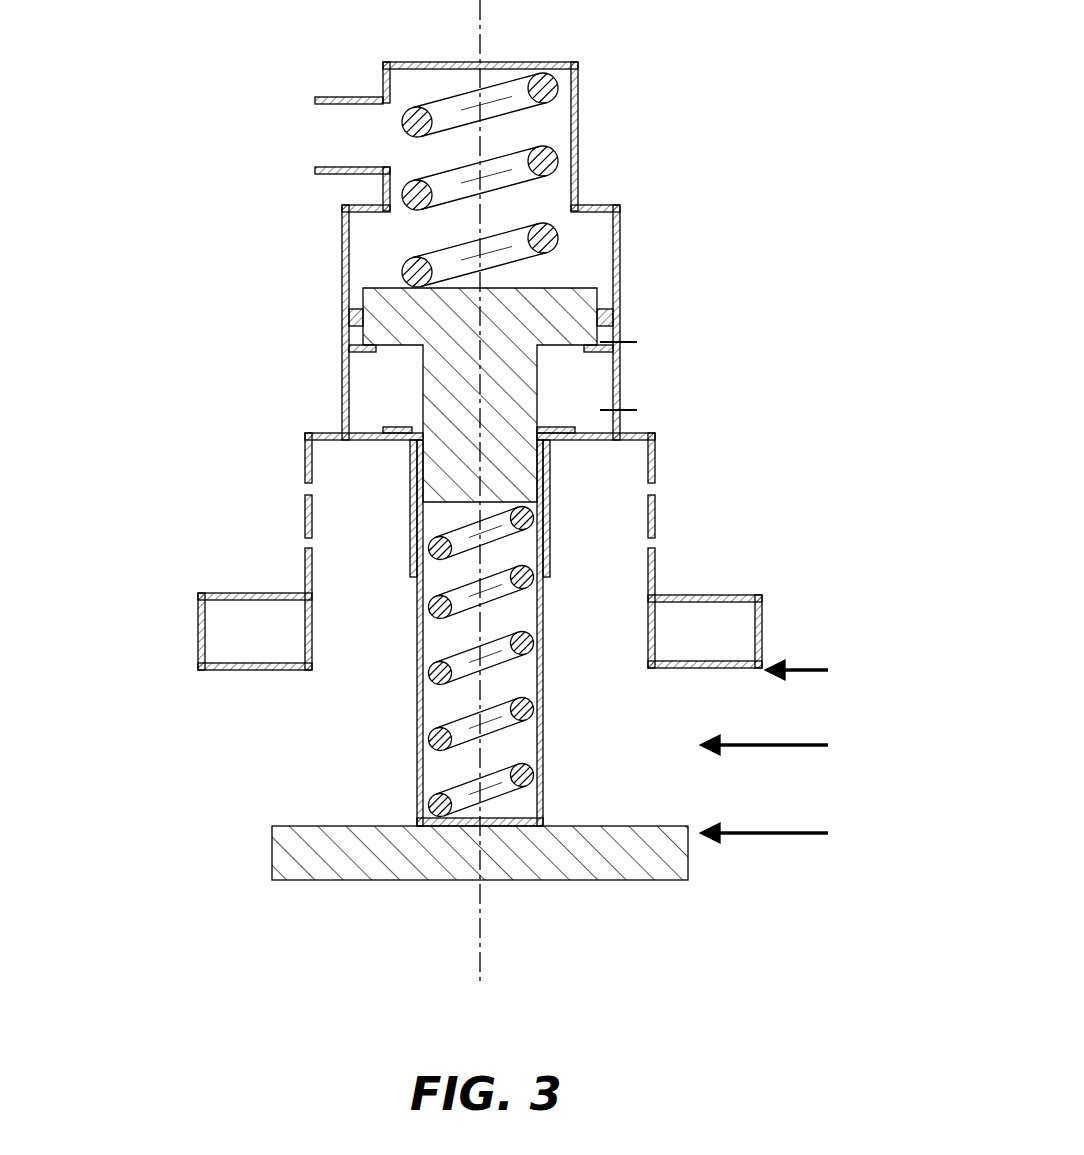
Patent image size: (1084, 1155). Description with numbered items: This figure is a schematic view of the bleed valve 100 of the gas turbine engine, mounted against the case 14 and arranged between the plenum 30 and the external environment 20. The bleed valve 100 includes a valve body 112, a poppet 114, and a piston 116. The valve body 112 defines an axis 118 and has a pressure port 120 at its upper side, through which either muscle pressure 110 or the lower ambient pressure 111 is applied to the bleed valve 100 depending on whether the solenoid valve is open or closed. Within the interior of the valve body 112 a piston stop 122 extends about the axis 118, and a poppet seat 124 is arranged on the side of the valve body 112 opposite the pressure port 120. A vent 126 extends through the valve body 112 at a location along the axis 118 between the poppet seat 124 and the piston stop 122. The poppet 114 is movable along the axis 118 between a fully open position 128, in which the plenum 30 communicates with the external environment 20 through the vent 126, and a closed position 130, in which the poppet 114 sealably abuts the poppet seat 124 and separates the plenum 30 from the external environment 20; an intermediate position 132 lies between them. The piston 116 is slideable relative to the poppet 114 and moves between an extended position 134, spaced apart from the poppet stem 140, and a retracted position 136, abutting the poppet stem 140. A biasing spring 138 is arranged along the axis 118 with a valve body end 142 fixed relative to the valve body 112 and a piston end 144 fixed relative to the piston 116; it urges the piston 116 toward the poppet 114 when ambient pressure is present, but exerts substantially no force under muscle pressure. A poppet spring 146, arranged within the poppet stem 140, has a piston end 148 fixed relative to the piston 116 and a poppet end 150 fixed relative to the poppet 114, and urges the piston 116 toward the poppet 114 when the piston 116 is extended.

The case 14 is at (718, 595).
The external environment 20 is at (112, 265).
The plenum 30 is at (236, 865).
The bleed valve 100 is at (142, 923).
The muscle pressure 110 is at (261, 115).
The ambient pressure 111 is at (368, 135).
The valve body 112 is at (223, 420).
The poppet 114 is at (380, 865).
The piston 116 is at (553, 317).
The axis 118 is at (482, 942).
The pressure port 120 is at (305, 155).
The piston stop 122 is at (368, 355).
The poppet seat 124 is at (270, 670).
The vent 126 is at (293, 543).
The fully open position 128 is at (768, 837).
The closed position 130 is at (805, 672).
The intermediate position 132 is at (767, 747).
The extended position 134 is at (628, 346).
The retracted position 136 is at (640, 405).
The biasing spring 138 is at (527, 165).
The poppet stem 140 is at (414, 668).
The valve body end 142 is at (545, 75).
The piston end 144 is at (410, 283).
The poppet spring 146 is at (495, 720).
The piston end 148 is at (522, 510).
The poppet end 150 is at (442, 812).